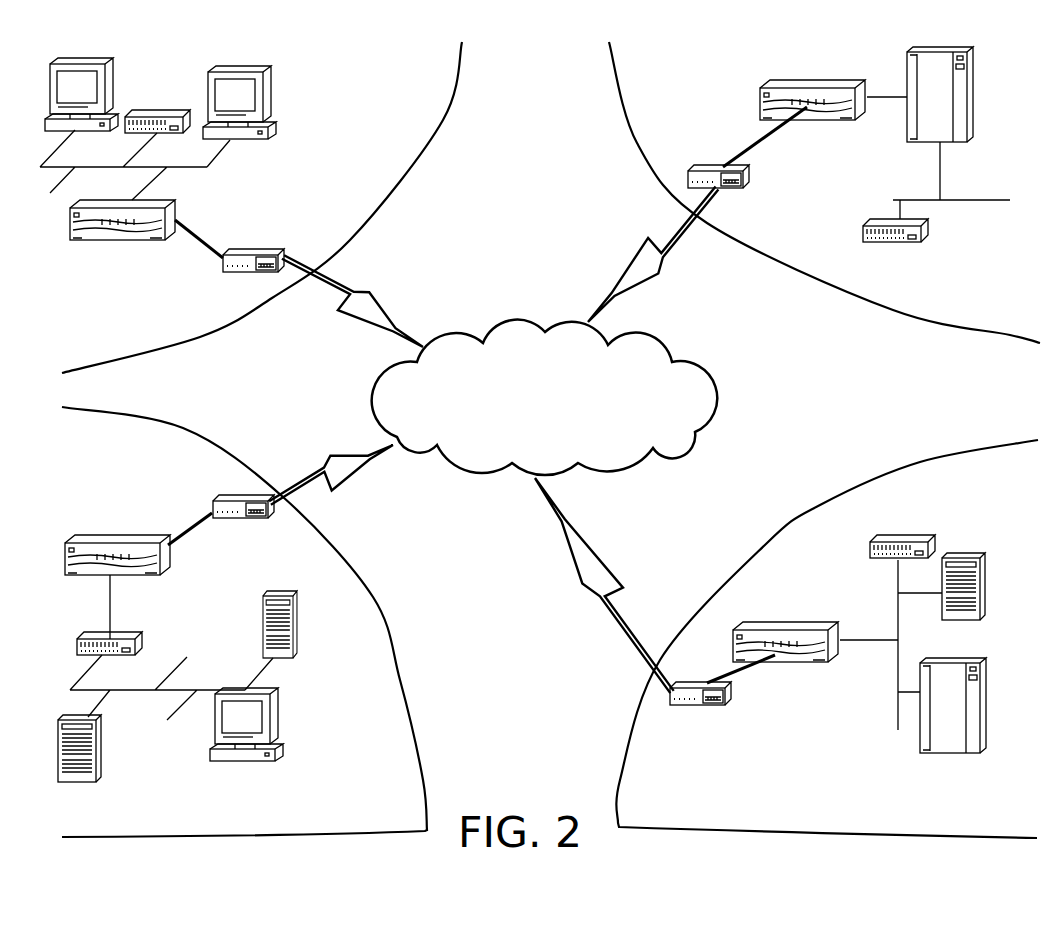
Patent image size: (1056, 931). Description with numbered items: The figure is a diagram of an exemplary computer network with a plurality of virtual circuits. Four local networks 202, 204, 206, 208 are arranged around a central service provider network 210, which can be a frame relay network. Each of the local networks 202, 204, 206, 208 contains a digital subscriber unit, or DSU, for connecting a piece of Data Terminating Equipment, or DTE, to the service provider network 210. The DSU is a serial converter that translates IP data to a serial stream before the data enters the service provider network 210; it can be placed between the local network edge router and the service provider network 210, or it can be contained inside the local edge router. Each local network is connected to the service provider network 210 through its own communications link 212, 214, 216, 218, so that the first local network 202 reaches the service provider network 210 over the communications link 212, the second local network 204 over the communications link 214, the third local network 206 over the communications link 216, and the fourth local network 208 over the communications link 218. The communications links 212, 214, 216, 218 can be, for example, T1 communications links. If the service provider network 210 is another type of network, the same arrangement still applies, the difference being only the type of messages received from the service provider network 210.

The local network 202 is at (443, 120).
The local network 204 is at (613, 100).
The local network 206 is at (403, 675).
The local network 208 is at (622, 745).
The service provider network 210 is at (662, 335).
The communications link 212 is at (325, 287).
The communications link 214 is at (683, 237).
The communications link 216 is at (358, 477).
The communications link 218 is at (580, 547).